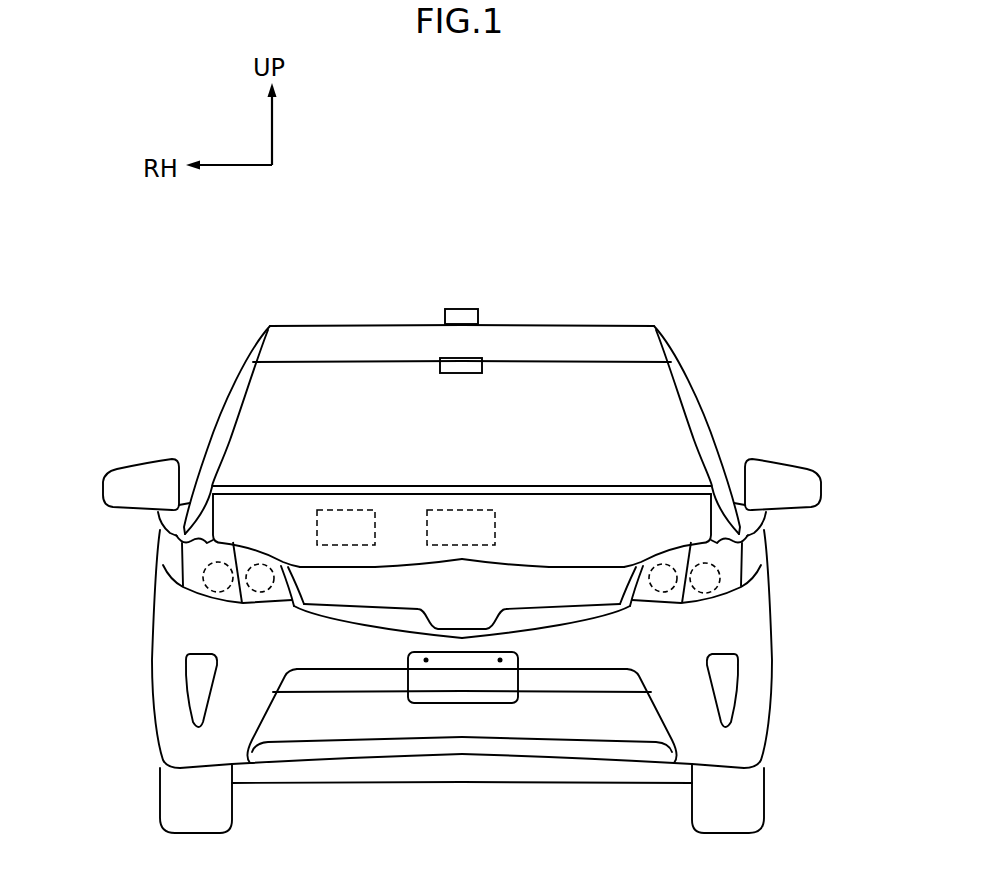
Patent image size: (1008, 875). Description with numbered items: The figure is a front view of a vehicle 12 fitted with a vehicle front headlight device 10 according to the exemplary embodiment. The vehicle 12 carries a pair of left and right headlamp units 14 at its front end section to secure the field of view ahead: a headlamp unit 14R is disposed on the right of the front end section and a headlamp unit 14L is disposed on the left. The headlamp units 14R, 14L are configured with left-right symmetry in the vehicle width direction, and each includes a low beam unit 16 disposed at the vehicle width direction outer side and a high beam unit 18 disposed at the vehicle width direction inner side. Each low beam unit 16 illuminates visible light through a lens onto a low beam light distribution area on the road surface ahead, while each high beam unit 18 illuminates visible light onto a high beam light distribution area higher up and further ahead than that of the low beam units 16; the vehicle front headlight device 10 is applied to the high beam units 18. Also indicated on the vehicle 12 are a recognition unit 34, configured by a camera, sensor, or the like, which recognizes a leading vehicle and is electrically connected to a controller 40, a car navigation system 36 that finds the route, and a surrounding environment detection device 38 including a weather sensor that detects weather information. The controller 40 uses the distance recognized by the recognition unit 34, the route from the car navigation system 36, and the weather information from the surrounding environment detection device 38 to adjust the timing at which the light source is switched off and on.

The vehicle front headlight device 10 is at (272, 554).
The vehicle 12 is at (716, 308).
The headlamp units 14 is at (463, 511).
The headlamp unit 14R is at (172, 562).
The headlamp unit 14L is at (752, 558).
The low beam unit 16 is at (217, 590).
The high beam unit 18 is at (266, 556).
The recognition unit 34 is at (460, 373).
The car navigation system 36 is at (458, 525).
The surrounding environment detection device 38 is at (466, 313).
The controller 40 is at (347, 524).